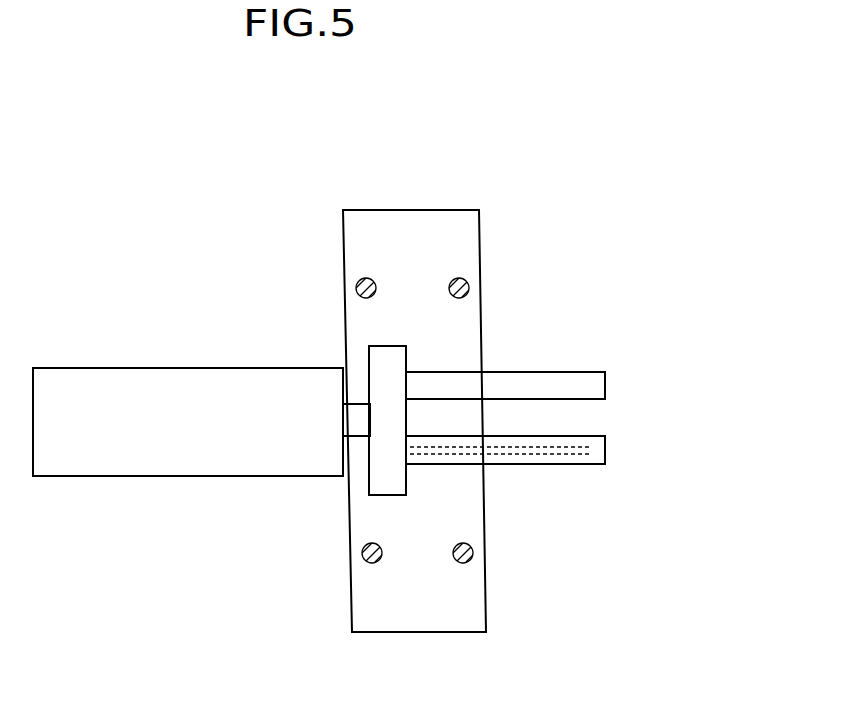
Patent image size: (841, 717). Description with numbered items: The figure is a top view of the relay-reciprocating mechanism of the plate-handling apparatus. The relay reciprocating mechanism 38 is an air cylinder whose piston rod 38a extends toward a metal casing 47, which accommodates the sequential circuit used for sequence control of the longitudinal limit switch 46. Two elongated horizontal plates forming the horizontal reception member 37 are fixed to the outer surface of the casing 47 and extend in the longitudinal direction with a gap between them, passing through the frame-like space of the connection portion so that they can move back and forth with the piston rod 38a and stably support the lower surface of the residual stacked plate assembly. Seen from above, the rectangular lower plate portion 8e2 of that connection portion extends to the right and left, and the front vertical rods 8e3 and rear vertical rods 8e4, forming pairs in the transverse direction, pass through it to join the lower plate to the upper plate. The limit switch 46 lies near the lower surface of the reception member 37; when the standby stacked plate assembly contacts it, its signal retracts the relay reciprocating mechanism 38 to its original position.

The lower plate portion 8e2 is at (473, 318).
The front vertical rods 8e3 is at (458, 278).
The rear vertical rods 8e4 is at (462, 563).
The relay reciprocating mechanism 38 is at (108, 463).
The piston rod 38a is at (350, 423).
The metal casing 47 is at (380, 360).
The horizontal reception member 37 is at (600, 450).
The longitudinal limit switch 46 is at (560, 457).